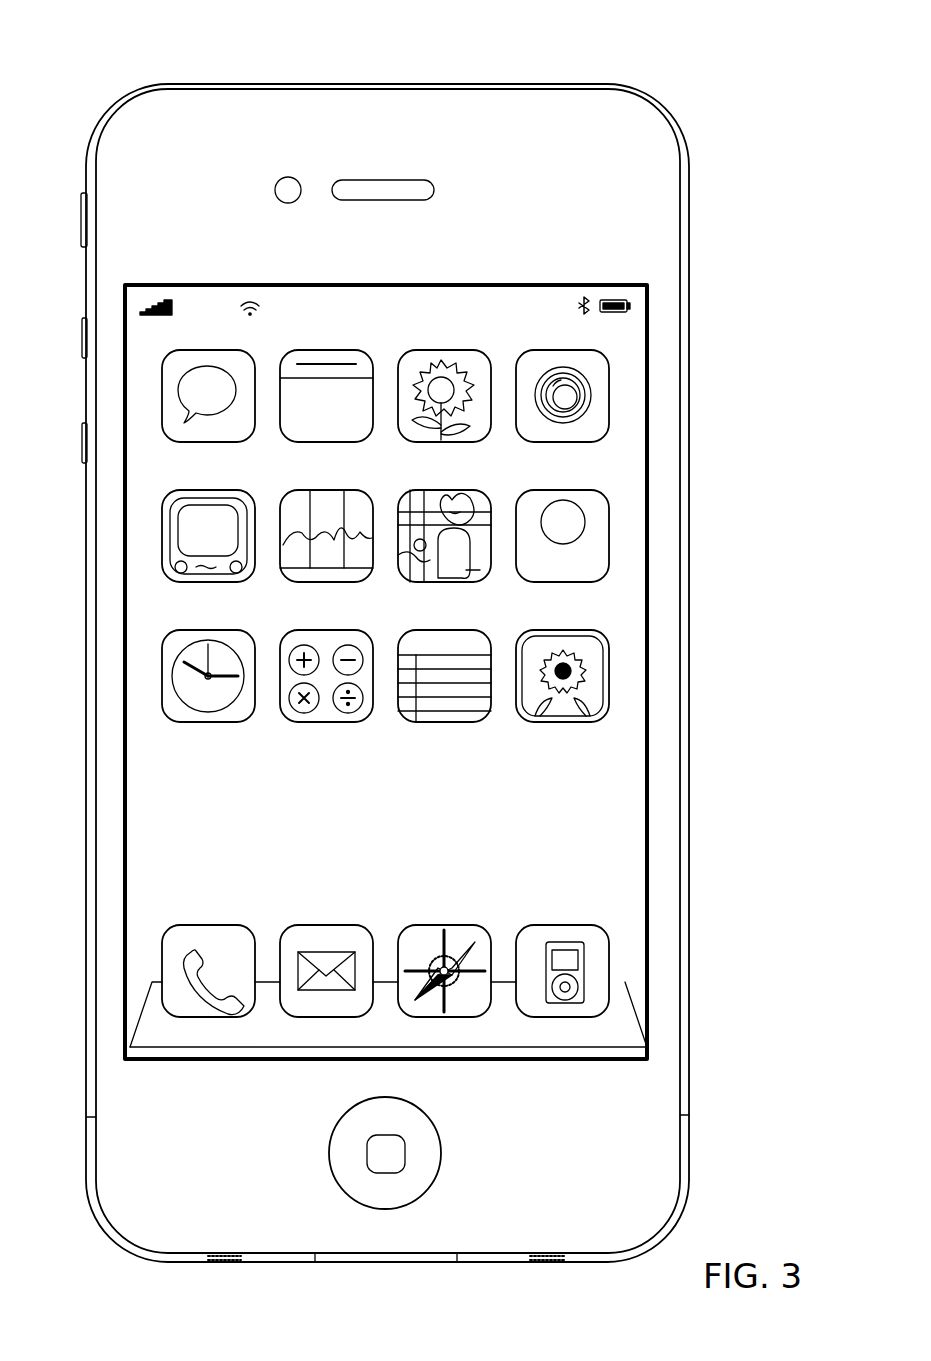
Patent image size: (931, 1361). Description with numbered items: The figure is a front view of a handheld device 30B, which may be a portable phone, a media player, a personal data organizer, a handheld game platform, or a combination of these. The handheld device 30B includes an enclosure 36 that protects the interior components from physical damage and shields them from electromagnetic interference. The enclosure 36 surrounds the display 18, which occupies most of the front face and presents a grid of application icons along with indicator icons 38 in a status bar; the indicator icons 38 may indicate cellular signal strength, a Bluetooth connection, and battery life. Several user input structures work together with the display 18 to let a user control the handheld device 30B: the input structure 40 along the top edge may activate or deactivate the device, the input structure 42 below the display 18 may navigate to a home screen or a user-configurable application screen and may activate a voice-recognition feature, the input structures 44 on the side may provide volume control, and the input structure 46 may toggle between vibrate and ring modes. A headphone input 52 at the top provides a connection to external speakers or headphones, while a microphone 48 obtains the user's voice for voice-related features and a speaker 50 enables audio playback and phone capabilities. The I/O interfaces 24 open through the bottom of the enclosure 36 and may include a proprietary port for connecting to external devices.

The handheld device 30B is at (180, 40).
The enclosure 36 is at (690, 282).
The input structure 40 is at (517, 85).
The headphone input 52 is at (250, 85).
The microphone 48 is at (398, 182).
The indicator icons 38 is at (165, 300).
The display 18 is at (660, 632).
The input structure 42 is at (442, 1163).
The input structures 44 is at (82, 325).
The input structure 46 is at (81, 232).
The I/O interfaces 24 is at (370, 1263).
The speaker 50 is at (550, 1263).